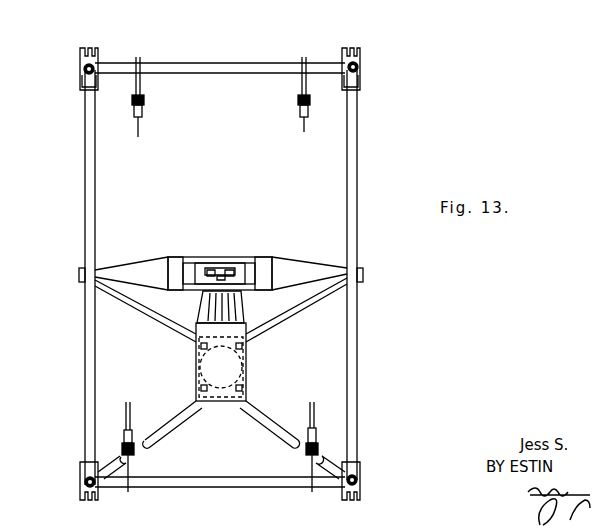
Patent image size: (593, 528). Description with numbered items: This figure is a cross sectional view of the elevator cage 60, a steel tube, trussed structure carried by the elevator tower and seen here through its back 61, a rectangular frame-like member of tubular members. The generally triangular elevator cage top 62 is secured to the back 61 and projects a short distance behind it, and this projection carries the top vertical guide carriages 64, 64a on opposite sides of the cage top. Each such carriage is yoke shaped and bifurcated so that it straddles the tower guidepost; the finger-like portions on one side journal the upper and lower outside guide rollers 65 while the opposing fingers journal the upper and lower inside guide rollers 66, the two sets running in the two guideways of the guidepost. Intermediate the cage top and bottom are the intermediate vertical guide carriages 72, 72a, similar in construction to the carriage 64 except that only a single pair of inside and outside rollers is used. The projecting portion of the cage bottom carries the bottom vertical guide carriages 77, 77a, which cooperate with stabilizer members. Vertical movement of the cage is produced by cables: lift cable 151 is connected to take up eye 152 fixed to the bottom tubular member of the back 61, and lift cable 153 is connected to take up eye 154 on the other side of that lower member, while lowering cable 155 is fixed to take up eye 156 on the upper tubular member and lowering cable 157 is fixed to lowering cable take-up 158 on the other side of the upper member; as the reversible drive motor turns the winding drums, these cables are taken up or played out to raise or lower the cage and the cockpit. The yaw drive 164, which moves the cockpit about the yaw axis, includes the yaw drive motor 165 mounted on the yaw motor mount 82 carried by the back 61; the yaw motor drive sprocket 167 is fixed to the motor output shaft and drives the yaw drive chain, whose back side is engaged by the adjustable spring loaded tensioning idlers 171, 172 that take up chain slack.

The elevator cage 60 is at (225, 56).
The elevator cage back 61 is at (84, 156).
The elevator cage top 62 is at (260, 62).
The top vertical guide carriage 64 is at (80, 62).
The top vertical guide carriage 64a is at (362, 62).
The outside guide rollers 65 is at (88, 48).
The inside guide rollers 66 is at (96, 48).
The intermediate vertical guide carriage 72 is at (79, 275).
The intermediate vertical guide carriage 72a is at (363, 275).
The bottom vertical guide carriage 77 is at (82, 482).
The bottom vertical guide carriage 77a is at (362, 480).
The yaw motor mount 82 is at (209, 326).
The lift cable 151 is at (127, 410).
The take up eye 152 is at (134, 468).
The lift cable 153 is at (310, 404).
The take up eye 154 is at (308, 464).
The lowering cable 155 is at (140, 120).
The take up eye 156 is at (142, 78).
The lowering cable 157 is at (303, 120).
The lowering cable take-up 158 is at (302, 80).
The yaw drive 164 is at (242, 308).
The yaw drive motor 165 is at (203, 306).
The yaw motor drive sprocket 167 is at (221, 267).
The yaw motor tensioning idler 171 is at (239, 268).
The yaw motor tensioning idler 172 is at (208, 270).